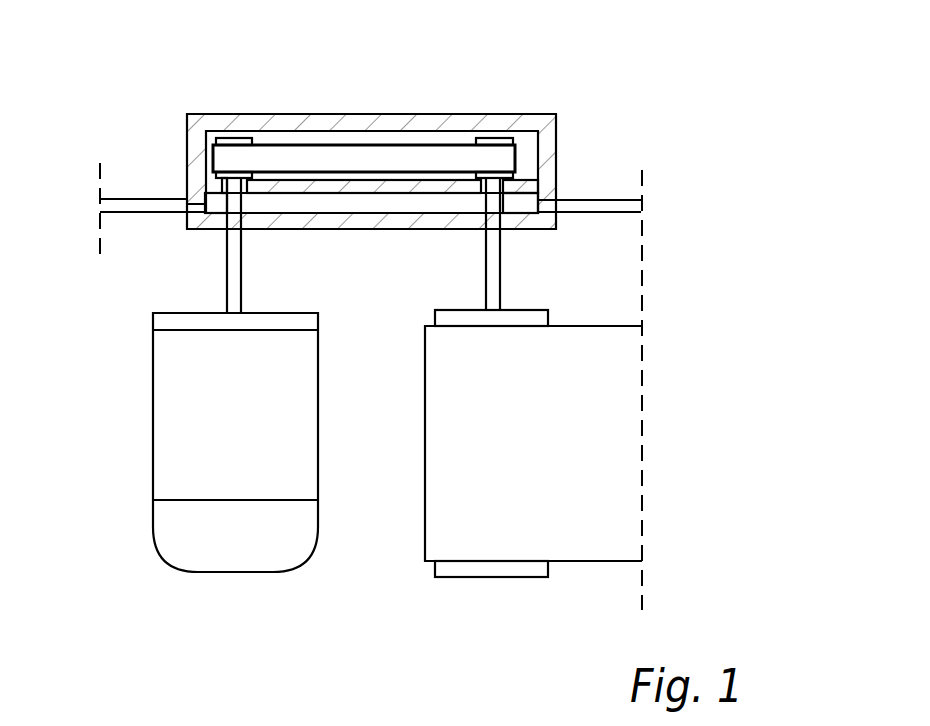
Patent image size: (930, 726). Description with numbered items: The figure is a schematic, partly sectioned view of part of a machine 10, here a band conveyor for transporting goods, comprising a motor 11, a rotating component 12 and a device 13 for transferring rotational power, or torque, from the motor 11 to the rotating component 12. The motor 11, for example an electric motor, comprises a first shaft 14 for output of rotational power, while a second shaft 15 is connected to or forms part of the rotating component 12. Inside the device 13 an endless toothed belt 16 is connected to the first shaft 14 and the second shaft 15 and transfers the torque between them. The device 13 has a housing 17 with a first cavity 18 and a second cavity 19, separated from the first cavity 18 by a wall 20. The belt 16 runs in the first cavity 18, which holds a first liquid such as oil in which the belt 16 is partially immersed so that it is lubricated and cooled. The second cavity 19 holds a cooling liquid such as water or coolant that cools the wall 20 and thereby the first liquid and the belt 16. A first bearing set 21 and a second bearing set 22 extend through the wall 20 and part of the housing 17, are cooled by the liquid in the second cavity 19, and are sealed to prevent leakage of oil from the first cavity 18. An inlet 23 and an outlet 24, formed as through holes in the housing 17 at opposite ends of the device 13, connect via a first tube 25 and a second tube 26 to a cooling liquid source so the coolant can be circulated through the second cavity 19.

The machine 10 is at (575, 55).
The motor 11 is at (158, 418).
The rotating component 12 is at (480, 552).
The device for transferring rotational power 13 is at (423, 122).
The first shaft 14 is at (228, 275).
The second shaft 15 is at (500, 287).
The endless toothed belt 16 is at (309, 150).
The housing 17 is at (188, 131).
The first cavity 18 is at (362, 138).
The second cavity 19 is at (378, 203).
The wall 20 is at (318, 185).
The first bearing set 21 is at (220, 188).
The second bearing set 22 is at (505, 188).
The inlet 23 is at (197, 208).
The outlet 24 is at (553, 207).
The first tube 25 is at (105, 205).
The second tube 26 is at (641, 205).